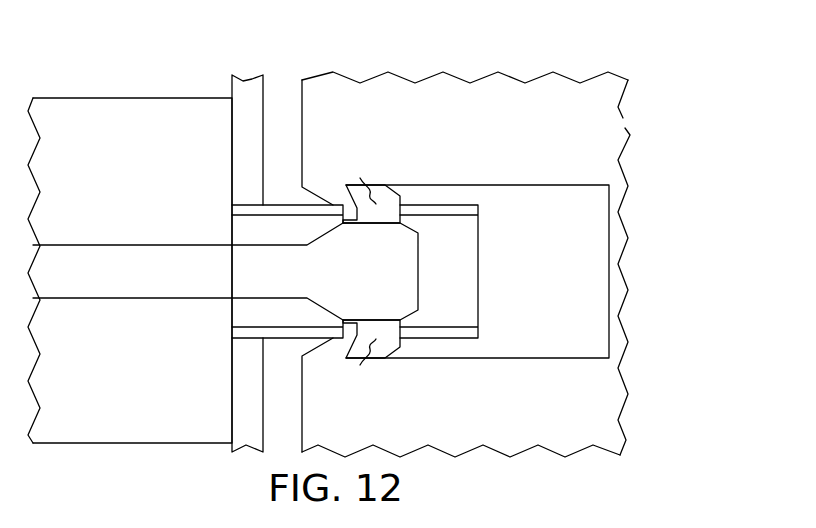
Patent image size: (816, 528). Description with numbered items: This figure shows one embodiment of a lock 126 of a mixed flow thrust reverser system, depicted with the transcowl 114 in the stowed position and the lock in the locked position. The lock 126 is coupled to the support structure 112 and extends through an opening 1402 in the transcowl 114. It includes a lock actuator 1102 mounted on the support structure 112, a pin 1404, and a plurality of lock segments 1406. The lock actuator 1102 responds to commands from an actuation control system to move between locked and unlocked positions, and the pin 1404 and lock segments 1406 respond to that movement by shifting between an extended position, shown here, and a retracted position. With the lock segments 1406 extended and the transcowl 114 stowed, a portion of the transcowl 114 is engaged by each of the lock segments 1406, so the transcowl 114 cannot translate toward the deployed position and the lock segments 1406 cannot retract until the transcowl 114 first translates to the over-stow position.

The support structure 112 is at (242, 92).
The transcowl 114 is at (603, 122).
The lock 126 is at (632, 87).
The lock actuator 1102 is at (141, 189).
The opening 1402 is at (315, 202).
The pin 1404 is at (336, 283).
The lock segments 1406 is at (374, 198).